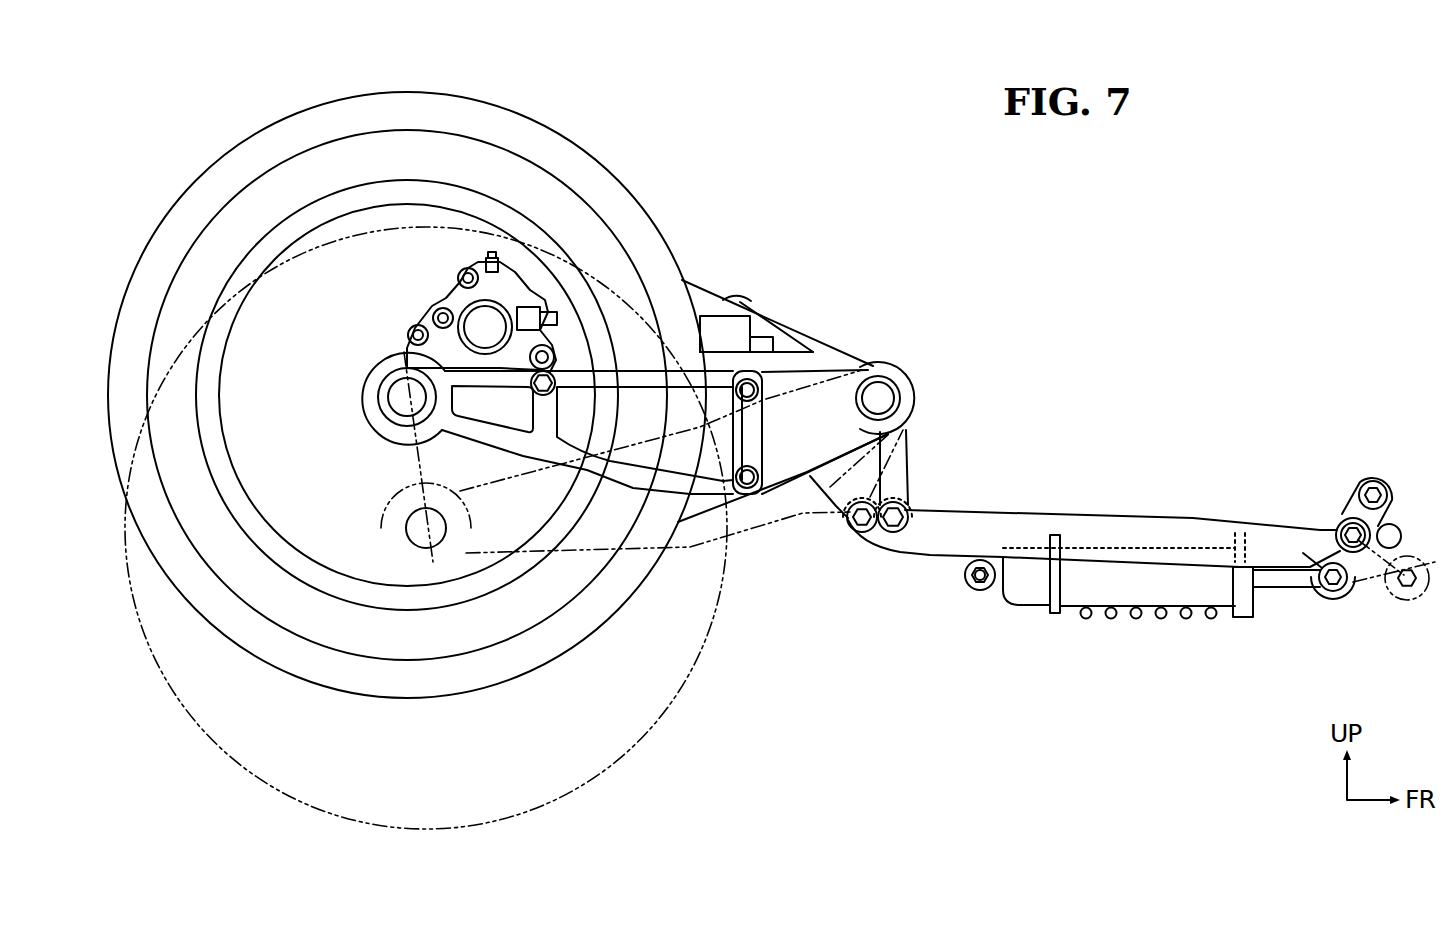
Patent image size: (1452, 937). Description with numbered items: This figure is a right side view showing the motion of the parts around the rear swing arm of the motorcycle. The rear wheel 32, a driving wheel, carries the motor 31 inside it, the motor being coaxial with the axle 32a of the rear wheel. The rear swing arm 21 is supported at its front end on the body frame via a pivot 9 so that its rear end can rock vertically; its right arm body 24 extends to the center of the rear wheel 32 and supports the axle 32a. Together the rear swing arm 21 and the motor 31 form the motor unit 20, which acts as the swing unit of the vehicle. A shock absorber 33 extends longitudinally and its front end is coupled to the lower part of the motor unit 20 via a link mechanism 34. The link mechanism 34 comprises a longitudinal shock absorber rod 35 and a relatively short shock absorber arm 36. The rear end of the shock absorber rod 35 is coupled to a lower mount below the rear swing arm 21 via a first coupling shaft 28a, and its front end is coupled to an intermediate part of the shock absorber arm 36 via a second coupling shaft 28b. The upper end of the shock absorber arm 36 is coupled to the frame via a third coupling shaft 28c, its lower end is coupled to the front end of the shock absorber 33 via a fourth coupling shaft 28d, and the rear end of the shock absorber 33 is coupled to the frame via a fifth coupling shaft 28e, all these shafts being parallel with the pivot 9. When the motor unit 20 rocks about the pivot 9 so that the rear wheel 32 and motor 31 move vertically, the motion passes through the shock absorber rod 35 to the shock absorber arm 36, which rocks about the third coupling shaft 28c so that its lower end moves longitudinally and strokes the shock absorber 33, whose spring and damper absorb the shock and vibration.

The pivot 9 is at (880, 398).
The motor unit 20 is at (787, 290).
The rear swing arm 21 is at (834, 344).
The right arm body 24 is at (640, 322).
The first coupling shaft 28a is at (855, 532).
The second coupling shaft 28b is at (1344, 522).
The third coupling shaft 28c is at (1385, 486).
The fourth coupling shaft 28d is at (1331, 586).
The fifth coupling shaft 28e is at (975, 587).
The motor 31 is at (310, 190).
The rear wheel 32 is at (190, 205).
The axle 32a is at (397, 400).
The shock absorber 33 is at (1143, 628).
The link mechanism 34 is at (1345, 388).
The shock absorber rod 35 is at (1262, 528).
The shock absorber arm 36 is at (1354, 478).